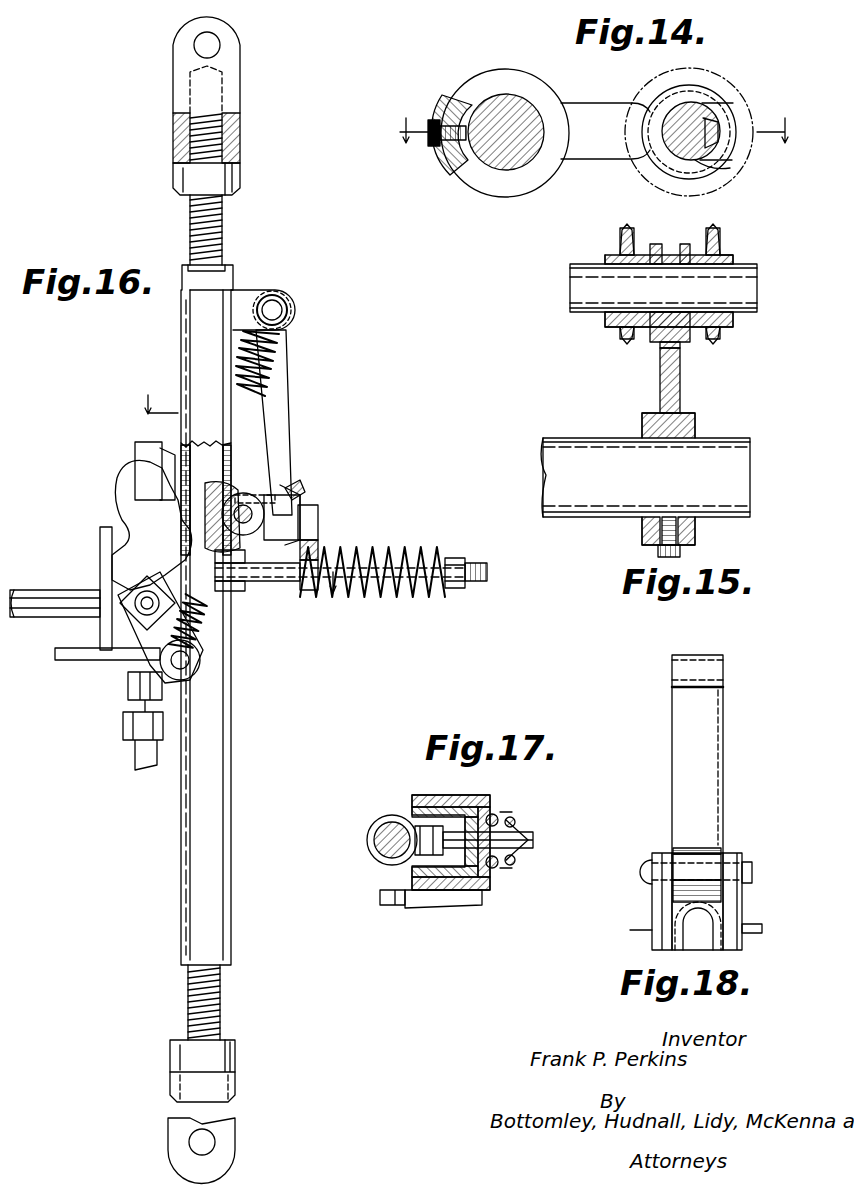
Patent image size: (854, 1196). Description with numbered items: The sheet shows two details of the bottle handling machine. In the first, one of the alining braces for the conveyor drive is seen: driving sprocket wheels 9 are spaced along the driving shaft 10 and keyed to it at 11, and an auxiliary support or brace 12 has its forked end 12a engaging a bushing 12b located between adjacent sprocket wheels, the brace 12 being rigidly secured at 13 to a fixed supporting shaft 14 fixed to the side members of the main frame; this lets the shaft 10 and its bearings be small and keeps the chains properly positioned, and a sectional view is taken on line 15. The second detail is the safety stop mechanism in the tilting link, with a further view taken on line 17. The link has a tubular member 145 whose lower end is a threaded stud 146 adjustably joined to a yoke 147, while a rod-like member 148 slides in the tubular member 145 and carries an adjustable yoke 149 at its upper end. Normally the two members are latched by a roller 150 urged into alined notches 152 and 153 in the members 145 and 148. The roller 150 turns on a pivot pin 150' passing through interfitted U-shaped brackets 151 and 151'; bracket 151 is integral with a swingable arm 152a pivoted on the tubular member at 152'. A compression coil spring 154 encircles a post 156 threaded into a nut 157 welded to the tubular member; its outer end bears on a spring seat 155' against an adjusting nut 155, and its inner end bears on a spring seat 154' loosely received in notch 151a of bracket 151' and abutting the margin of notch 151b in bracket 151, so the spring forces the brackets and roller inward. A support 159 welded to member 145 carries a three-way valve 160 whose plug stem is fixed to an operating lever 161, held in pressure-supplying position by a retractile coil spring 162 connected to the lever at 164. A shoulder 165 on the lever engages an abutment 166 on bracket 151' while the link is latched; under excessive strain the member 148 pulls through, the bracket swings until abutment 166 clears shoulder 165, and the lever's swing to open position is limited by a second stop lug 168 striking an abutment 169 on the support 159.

In FIG. 14, the driving sprocket wheel 9 is at (735, 80).
In FIG. 15, the driving sprocket wheel 9 is at (630, 232).
In FIG. 14, the driving shaft 10 is at (712, 118).
In FIG. 15, the driving shaft 10 is at (583, 290).
In FIG. 14, the key 11 is at (705, 165).
In FIG. 14, the auxiliary support or brace 12 is at (607, 108).
In FIG. 15, the auxiliary support or brace 12 is at (680, 395).
In FIG. 14, the forked end 12a is at (685, 95).
In FIG. 15, the forked end 12a is at (675, 345).
In FIG. 14, the bushing 12b is at (712, 140).
In FIG. 15, the bushing 12b is at (686, 245).
In FIG. 14, the securing means 13 is at (432, 118).
In FIG. 15, the securing means 13 is at (690, 545).
In FIG. 14, the fixed supporting shaft 14 is at (505, 170).
In FIG. 15, the fixed supporting shaft 14 is at (715, 468).
In FIG. 14, the section line 15- 15 is at (592, 141).
In FIG. 16, the section line 17- 17 is at (244, 500).
In FIG. 16, the tubular member 145 is at (231, 760).
In FIG. 17, the tubular member 145 is at (367, 830).
In FIG. 16, the threaded stud 146 is at (222, 985).
In FIG. 16, the yoke 147 is at (233, 1088).
In FIG. 16, the rod-like member 148 is at (225, 450).
In FIG. 17, the rod-like member 148 is at (375, 855).
In FIG. 16, the yoke 149 is at (241, 132).
In FIG. 16, the roller 150 is at (247, 489).
In FIG. 18, the roller 150 is at (708, 863).
In FIG. 16, the pivot pin 150' is at (324, 488).
In FIG. 18, the pivot pin 150' is at (773, 870).
In FIG. 16, the U-shaped bracket 151 is at (306, 499).
In FIG. 17, the U-shaped bracket 151 is at (405, 885).
In FIG. 18, the U-shaped bracket 151 is at (723, 901).
In FIG. 16, the U-shaped bracket 151' is at (340, 511).
In FIG. 17, the U-shaped bracket 151' is at (408, 831).
In FIG. 18, the U-shaped bracket 151' is at (734, 859).
In FIG. 18, the notch 151a is at (725, 945).
In FIG. 18, the notch 151b is at (626, 928).
In FIG. 16, the recess or notch 152 is at (190, 422).
In FIG. 18, the recess or notch 152 is at (720, 818).
In FIG. 16, the pivot 152' is at (258, 296).
In FIG. 18, the pivot 152' is at (725, 667).
In FIG. 16, the swingable arm 152a is at (277, 437).
In FIG. 16, the recess or notch 153 is at (222, 515).
In FIG. 16, the compression coil spring 154 is at (339, 549).
In FIG. 17, the compression coil spring 154 is at (517, 876).
In FIG. 16, the spring seat 154' is at (365, 521).
In FIG. 17, the spring seat 154' is at (528, 824).
In FIG. 16, the nut 155 is at (387, 586).
In FIG. 16, the spring seat 155' is at (445, 548).
In FIG. 16, the stud or post 156 is at (485, 565).
In FIG. 17, the stud or post 156 is at (515, 858).
In FIG. 16, the nut 157 is at (283, 590).
In FIG. 17, the nut 157 is at (440, 865).
In FIG. 16, the support 159 is at (100, 630).
In FIG. 16, the three-way valve 160 is at (122, 598).
In FIG. 16, the operating lever 161 is at (135, 503).
In FIG. 16, the retractile coil spring 162 is at (262, 365).
In FIG. 16, the spring connection 164 is at (200, 665).
In FIG. 16, the shoulder 165 is at (205, 610).
In FIG. 17, the shoulder 165 is at (385, 905).
In FIG. 16, the abutment 166 is at (235, 585).
In FIG. 17, the abutment 166 is at (435, 905).
In FIG. 18, the abutment 166 is at (762, 928).
In FIG. 16, the second stop lug 168 is at (103, 533).
In FIG. 16, the abutment 169 is at (75, 656).